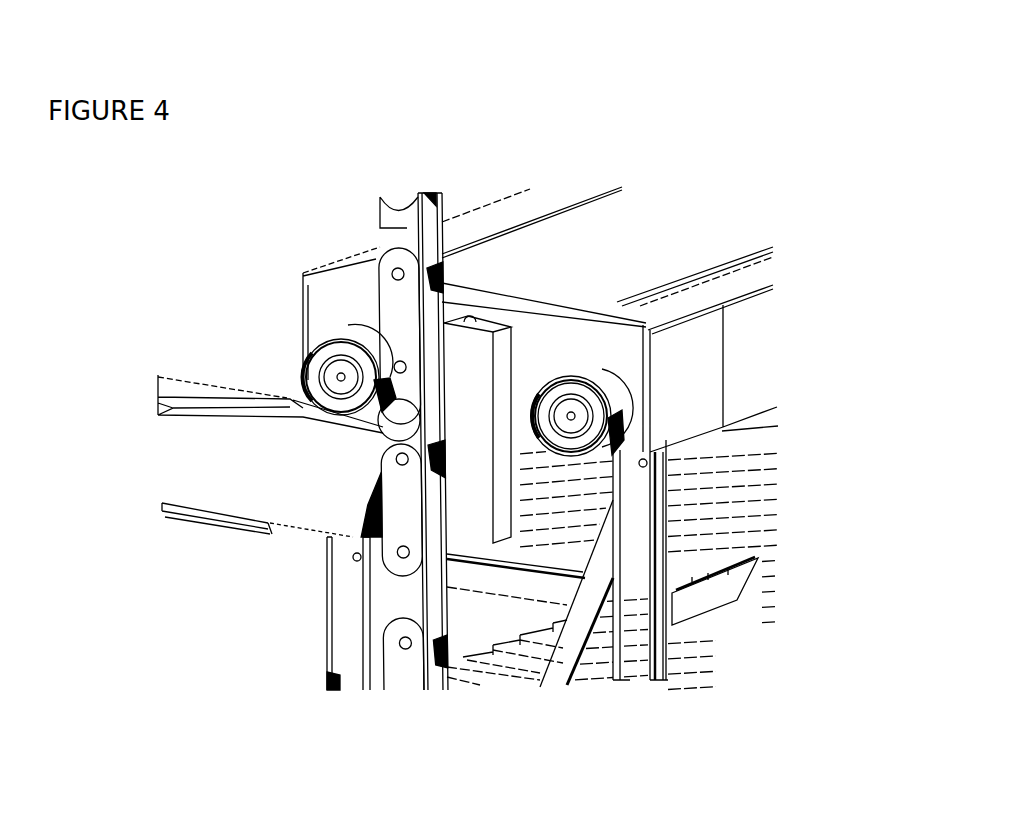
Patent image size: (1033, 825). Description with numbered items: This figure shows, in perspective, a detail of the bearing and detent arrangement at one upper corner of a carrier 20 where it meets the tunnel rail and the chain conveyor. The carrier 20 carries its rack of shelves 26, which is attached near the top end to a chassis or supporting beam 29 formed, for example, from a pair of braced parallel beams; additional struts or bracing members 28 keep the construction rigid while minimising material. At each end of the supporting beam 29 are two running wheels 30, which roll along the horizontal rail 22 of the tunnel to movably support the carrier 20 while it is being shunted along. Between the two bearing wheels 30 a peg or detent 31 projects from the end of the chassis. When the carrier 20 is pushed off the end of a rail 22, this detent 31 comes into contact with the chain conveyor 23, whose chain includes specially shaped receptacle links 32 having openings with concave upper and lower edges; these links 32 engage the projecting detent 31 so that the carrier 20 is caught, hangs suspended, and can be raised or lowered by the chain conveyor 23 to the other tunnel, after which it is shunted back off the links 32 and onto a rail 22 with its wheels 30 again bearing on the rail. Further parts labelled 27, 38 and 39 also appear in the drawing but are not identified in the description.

The carrier 20 is at (621, 110).
The rails 22 is at (218, 397).
The chain conveyor 23 is at (407, 227).
The rack of shelves 26 is at (717, 462).
The support leg 27 is at (354, 662).
The bracing members 28 is at (570, 640).
The supporting beam 29 is at (500, 220).
The bearing wheels 30 is at (332, 335).
The detent 31 is at (390, 413).
The receptacle links 32 is at (432, 397).
The lower guide 38 is at (228, 473).
The block 39 is at (486, 428).